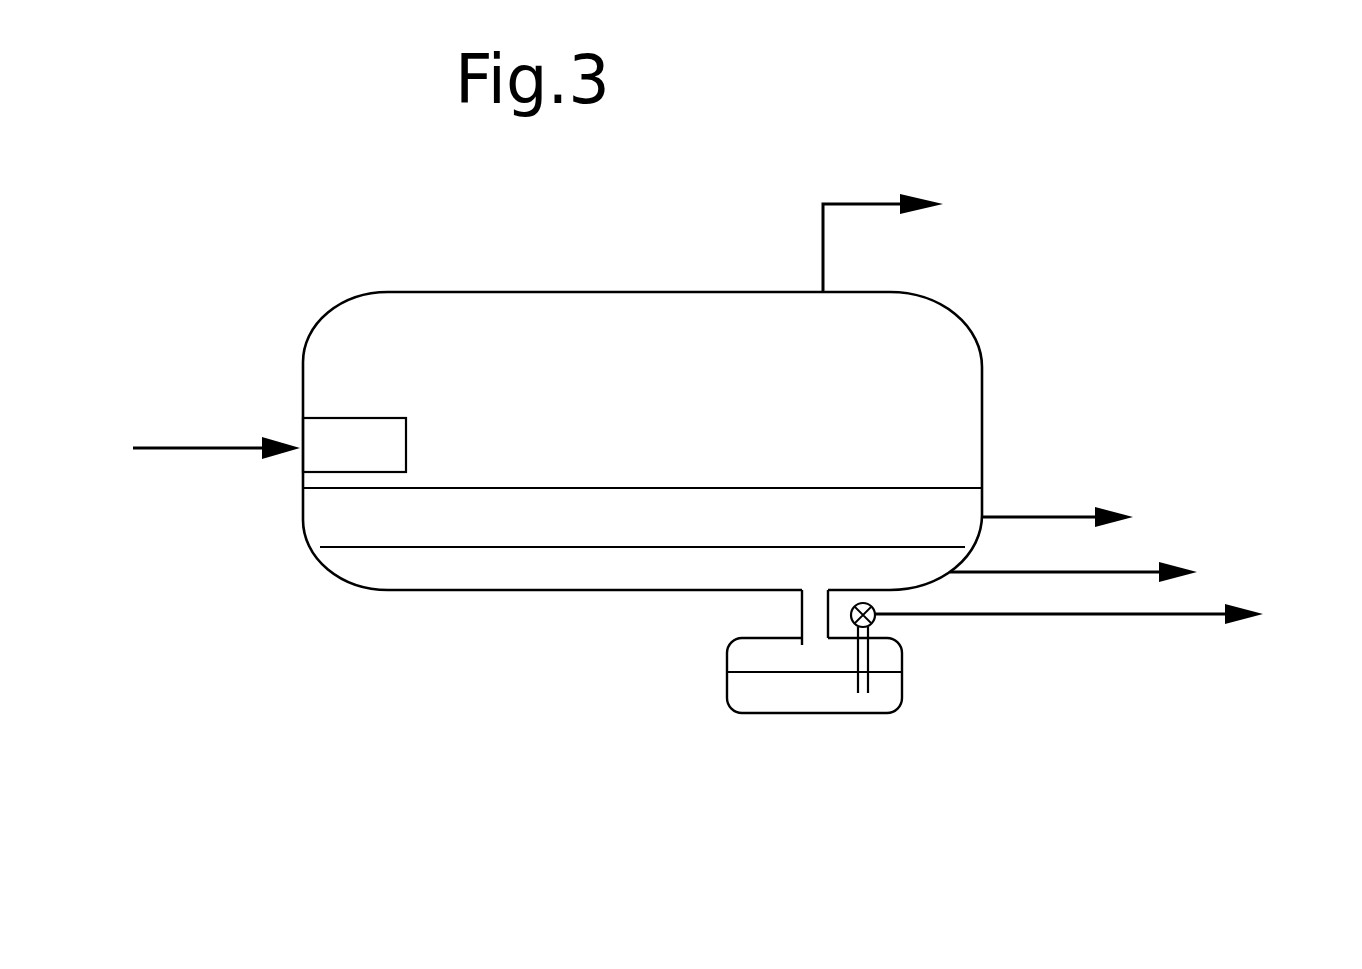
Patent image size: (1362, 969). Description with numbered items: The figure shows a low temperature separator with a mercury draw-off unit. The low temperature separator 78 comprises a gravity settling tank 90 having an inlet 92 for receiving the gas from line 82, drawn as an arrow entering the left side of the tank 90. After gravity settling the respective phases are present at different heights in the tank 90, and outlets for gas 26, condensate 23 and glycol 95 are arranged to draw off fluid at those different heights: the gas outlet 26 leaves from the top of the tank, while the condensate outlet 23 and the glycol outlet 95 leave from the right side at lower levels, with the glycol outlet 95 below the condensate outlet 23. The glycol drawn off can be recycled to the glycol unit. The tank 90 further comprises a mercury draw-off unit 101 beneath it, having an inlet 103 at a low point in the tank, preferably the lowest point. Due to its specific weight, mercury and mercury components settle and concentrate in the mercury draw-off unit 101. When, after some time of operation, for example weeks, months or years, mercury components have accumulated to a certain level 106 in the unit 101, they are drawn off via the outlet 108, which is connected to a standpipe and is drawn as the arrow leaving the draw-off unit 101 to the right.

The low temperature separator 78 is at (423, 275).
The gravity settling tank 90 is at (302, 365).
The inlet 92 is at (347, 418).
The line 82 is at (220, 452).
The gas outlet 26 is at (1001, 222).
The condensate outlet 23 is at (1195, 534).
The glycol outlet 95 is at (1258, 589).
The outlet 108 is at (1344, 637).
The inlet 103 is at (813, 599).
The mercury draw-off unit 101 is at (727, 650).
The level 106 is at (903, 672).